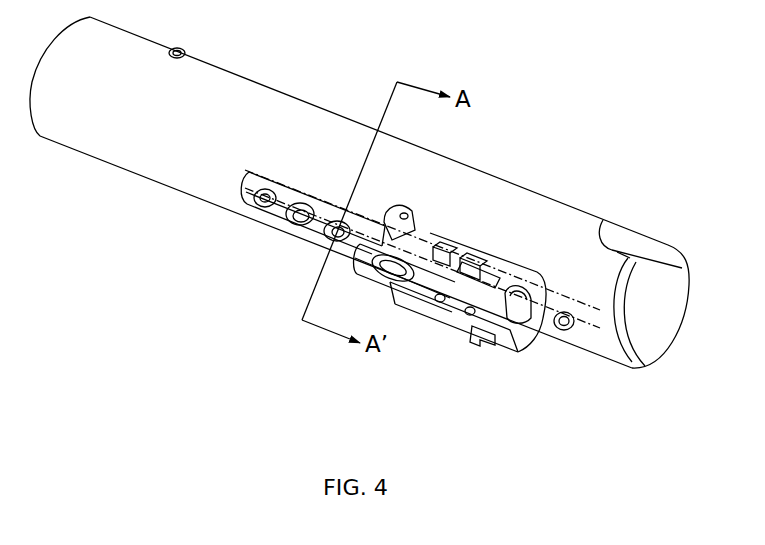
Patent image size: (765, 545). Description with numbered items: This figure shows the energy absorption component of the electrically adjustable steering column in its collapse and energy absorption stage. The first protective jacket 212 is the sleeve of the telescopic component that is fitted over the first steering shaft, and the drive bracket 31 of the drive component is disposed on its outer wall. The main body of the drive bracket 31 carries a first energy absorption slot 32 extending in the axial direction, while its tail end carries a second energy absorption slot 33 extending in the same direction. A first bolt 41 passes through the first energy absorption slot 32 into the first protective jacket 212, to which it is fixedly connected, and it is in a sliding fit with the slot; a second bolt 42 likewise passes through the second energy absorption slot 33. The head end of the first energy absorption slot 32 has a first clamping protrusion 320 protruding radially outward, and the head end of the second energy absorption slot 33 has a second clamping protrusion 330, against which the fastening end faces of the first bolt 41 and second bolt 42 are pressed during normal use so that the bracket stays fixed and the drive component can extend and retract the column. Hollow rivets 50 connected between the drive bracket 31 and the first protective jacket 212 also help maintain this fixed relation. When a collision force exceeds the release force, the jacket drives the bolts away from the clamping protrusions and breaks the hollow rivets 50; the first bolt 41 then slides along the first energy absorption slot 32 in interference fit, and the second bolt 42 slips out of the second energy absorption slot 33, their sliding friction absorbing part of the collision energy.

The first protective jacket 212 is at (230, 95).
The drive bracket 31 is at (283, 212).
The hollow rivets 50 is at (268, 200).
The first clamping protrusion 320 is at (300, 203).
The first bolt 41 is at (332, 230).
The first energy absorption slot 32 is at (360, 240).
The second energy absorption slot 33 is at (533, 307).
The second clamping protrusion 330 is at (515, 298).
The second bolt 42 is at (560, 327).